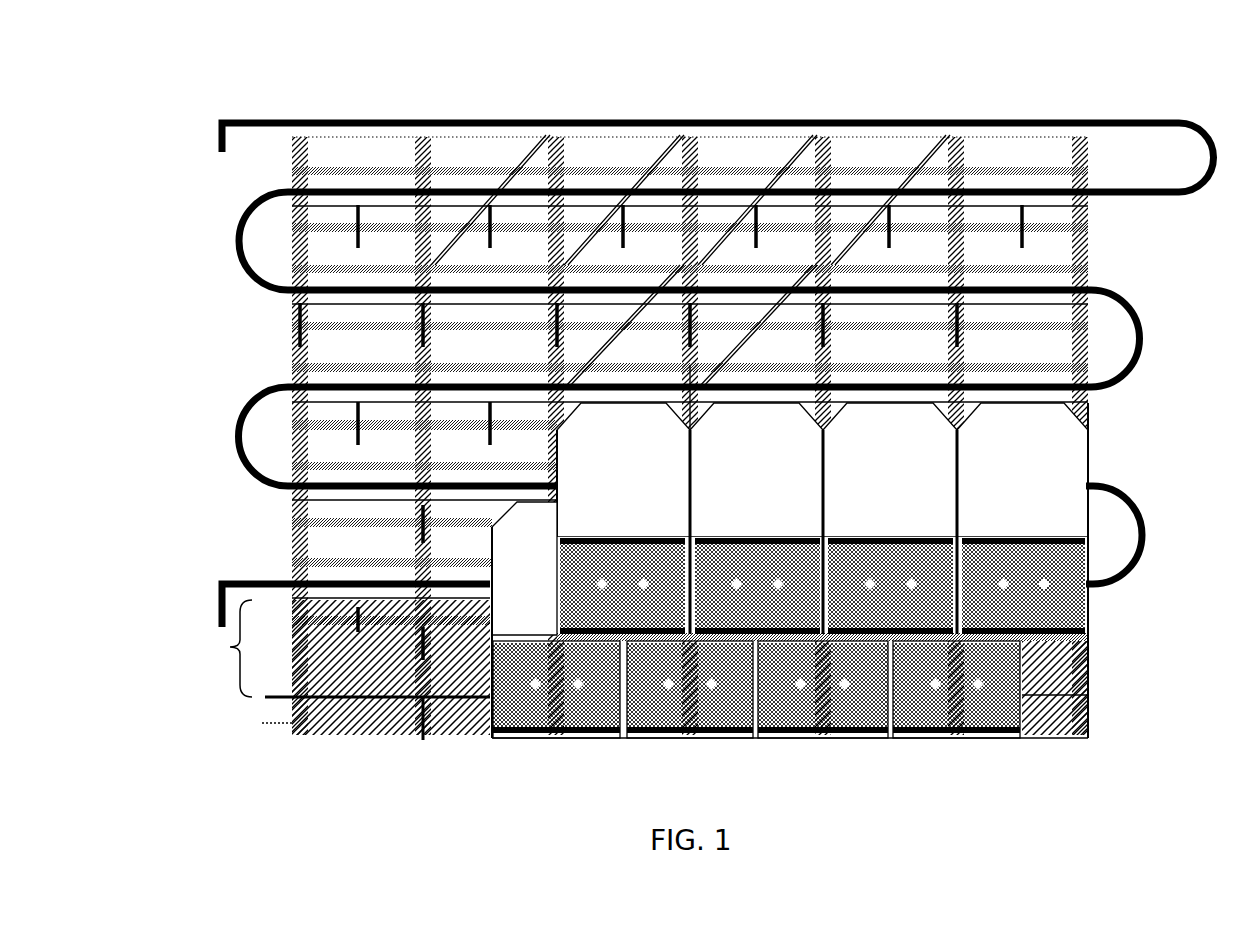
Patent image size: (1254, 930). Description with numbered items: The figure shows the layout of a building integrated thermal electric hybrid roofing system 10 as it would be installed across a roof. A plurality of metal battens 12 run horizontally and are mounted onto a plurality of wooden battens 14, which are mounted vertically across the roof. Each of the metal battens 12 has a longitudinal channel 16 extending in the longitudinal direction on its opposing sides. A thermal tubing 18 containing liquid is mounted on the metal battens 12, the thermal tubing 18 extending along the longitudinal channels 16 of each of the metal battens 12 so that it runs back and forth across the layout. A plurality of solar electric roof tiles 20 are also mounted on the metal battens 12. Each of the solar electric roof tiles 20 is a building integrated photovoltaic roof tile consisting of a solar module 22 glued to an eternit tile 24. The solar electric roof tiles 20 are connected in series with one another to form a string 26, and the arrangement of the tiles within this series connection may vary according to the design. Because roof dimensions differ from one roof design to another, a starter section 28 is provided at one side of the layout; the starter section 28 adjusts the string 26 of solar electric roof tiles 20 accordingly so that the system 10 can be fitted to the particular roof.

The building integrated thermal electric hybrid roofing system 10 is at (882, 86).
The metal battens 12 is at (292, 178).
The wooden battens 14 is at (290, 148).
The longitudinal channel 16 is at (698, 355).
The thermal tubing 18 is at (243, 217).
The solar electric roof tiles 20 is at (790, 666).
The solar module 22 is at (685, 712).
The eternit tile 24 is at (1073, 460).
The string 26 is at (1034, 526).
The starter section 28 is at (217, 650).